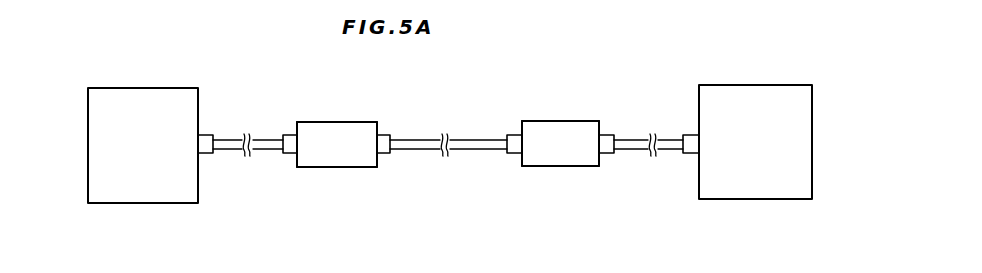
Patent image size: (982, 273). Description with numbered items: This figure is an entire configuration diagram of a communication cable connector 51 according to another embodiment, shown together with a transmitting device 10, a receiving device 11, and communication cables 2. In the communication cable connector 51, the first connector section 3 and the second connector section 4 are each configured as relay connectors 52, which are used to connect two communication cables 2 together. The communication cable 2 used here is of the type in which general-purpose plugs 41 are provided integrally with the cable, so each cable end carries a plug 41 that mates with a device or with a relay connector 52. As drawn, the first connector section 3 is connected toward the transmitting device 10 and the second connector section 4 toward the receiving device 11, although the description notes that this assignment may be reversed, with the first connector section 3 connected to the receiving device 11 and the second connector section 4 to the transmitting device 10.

The communication cable 2 is at (262, 152).
The first connector section 3 is at (340, 122).
The second connector section 4 is at (562, 121).
The transmitting device 10 is at (88, 88).
The receiving device 11 is at (812, 85).
The general-purpose plug 41 is at (215, 155).
The communication cable connector 51 is at (637, 67).
The relay connector 52 is at (340, 167).